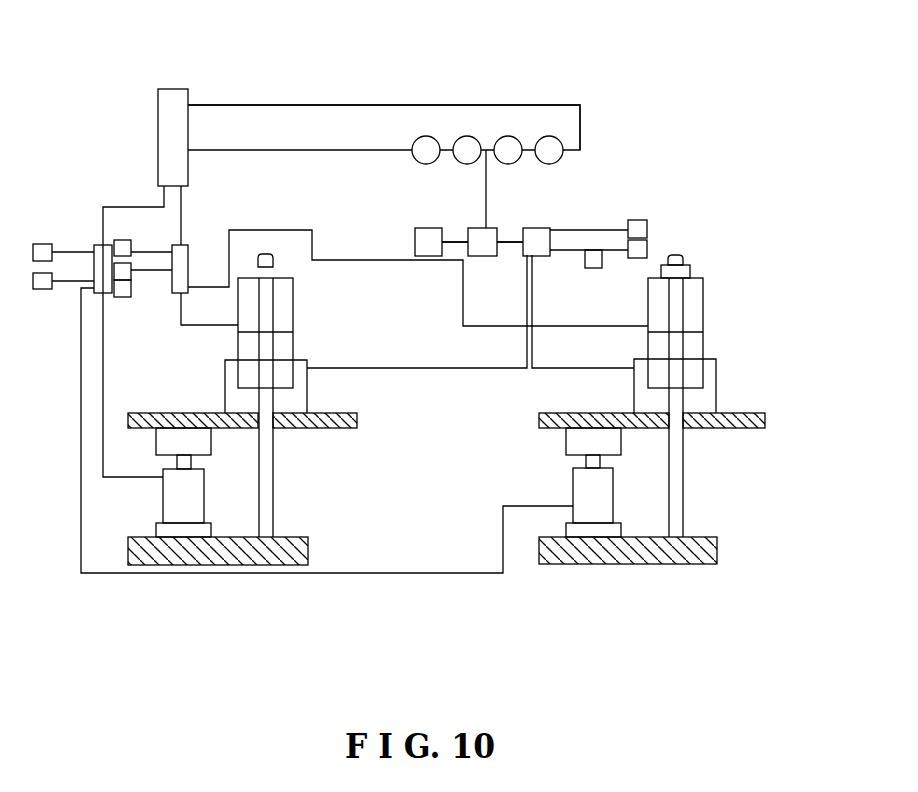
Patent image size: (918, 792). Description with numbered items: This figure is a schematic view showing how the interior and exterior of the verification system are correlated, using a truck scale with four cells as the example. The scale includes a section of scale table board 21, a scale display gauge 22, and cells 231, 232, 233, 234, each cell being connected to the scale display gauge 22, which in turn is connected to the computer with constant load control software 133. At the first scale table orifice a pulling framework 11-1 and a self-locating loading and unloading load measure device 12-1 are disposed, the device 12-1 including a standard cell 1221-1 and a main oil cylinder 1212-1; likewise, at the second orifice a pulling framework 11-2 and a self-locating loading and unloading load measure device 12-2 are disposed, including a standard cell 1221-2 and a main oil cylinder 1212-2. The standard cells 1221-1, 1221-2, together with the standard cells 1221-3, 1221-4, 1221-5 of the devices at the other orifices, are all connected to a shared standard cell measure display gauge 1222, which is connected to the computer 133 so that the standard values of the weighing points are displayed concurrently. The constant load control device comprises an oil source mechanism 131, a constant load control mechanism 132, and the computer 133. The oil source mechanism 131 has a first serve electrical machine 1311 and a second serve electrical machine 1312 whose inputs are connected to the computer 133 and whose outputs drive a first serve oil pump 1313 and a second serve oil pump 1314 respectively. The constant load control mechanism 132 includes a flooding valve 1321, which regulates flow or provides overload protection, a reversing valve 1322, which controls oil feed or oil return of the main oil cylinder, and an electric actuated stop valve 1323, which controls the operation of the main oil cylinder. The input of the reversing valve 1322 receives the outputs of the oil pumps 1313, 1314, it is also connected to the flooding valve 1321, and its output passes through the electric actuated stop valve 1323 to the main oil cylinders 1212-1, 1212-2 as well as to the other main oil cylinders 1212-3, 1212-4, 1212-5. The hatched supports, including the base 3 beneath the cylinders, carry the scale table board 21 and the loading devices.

The computer with constant load control software 133 is at (178, 103).
The oil source mechanism 131 is at (603, 55).
The first serve electrical machine 1311 is at (550, 148).
The second serve electrical machine 1312 is at (426, 146).
The first serve oil pump 1313 is at (509, 146).
The second serve oil pump 1314 is at (466, 146).
The constant load control mechanism 132 is at (588, 198).
The flooding valve 1321 is at (428, 240).
The reversing valve 1322 is at (485, 240).
The electric actuated stop valve 1323 is at (541, 240).
The main oil cylinder 1212-3 is at (640, 228).
The main oil cylinder 1212-4 is at (640, 248).
The main oil cylinder 1212-5 is at (593, 268).
The scale display gauge 22 is at (98, 255).
The cell 233 is at (36, 248).
The cell 234 is at (38, 288).
The standard cell 1221-3 is at (123, 248).
The standard cell 1221-4 is at (126, 272).
The standard cell 1221-5 is at (122, 292).
The standard cell measure display gauge 1222 is at (181, 268).
The self-locating loading and unloading load measure device 12-1 is at (342, 343).
The standard cell 1221-1 is at (280, 298).
The main oil cylinder 1212-1 is at (283, 358).
The pulling framework 11-1 is at (265, 403).
The self-locating loading and unloading load measure device 12-2 is at (758, 343).
The standard cell 1221-2 is at (690, 300).
The main oil cylinder 1212-2 is at (700, 352).
The pulling framework 11-2 is at (675, 400).
The scale table board 21 is at (330, 429).
The base 3 is at (292, 537).
The cell 231 is at (175, 494).
The cell 232 is at (584, 485).